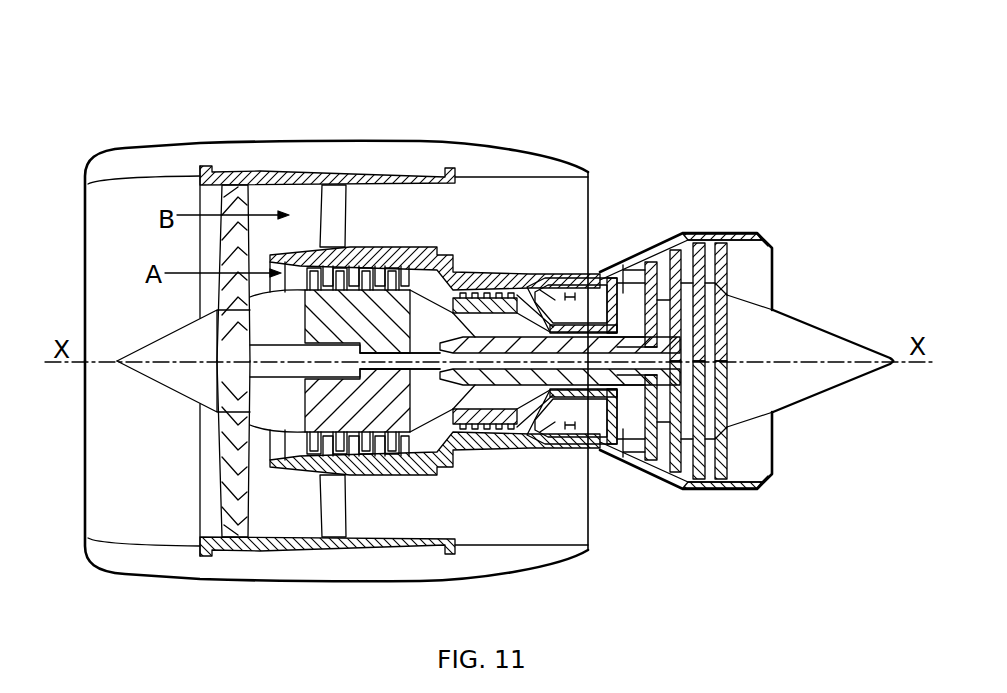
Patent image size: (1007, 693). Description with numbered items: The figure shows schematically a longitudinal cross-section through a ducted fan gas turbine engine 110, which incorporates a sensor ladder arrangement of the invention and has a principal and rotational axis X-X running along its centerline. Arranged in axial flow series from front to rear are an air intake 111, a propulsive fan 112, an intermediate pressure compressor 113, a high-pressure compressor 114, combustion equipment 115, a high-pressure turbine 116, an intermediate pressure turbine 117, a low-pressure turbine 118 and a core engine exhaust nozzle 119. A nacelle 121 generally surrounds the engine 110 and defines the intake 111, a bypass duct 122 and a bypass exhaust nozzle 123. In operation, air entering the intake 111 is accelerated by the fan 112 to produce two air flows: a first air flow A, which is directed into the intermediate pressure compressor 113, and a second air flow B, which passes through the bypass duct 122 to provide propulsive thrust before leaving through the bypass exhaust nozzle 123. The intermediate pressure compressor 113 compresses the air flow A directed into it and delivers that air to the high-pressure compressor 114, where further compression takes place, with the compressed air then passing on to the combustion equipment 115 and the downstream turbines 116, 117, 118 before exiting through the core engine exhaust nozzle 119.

The ducted fan gas turbine engine 110 is at (130, 108).
The air intake 111 is at (138, 178).
The propulsive fan 112 is at (222, 492).
The intermediate pressure compressor 113 is at (373, 452).
The high-pressure compressor 114 is at (500, 286).
The combustion equipment 115 is at (527, 447).
The high-pressure turbine 116 is at (605, 448).
The intermediate pressure turbine 117 is at (646, 258).
The low-pressure turbine 118 is at (668, 472).
The core engine exhaust nozzle 119 is at (763, 236).
The nacelle 121 is at (373, 142).
The bypass duct 122 is at (542, 213).
The bypass exhaust nozzle 123 is at (590, 170).